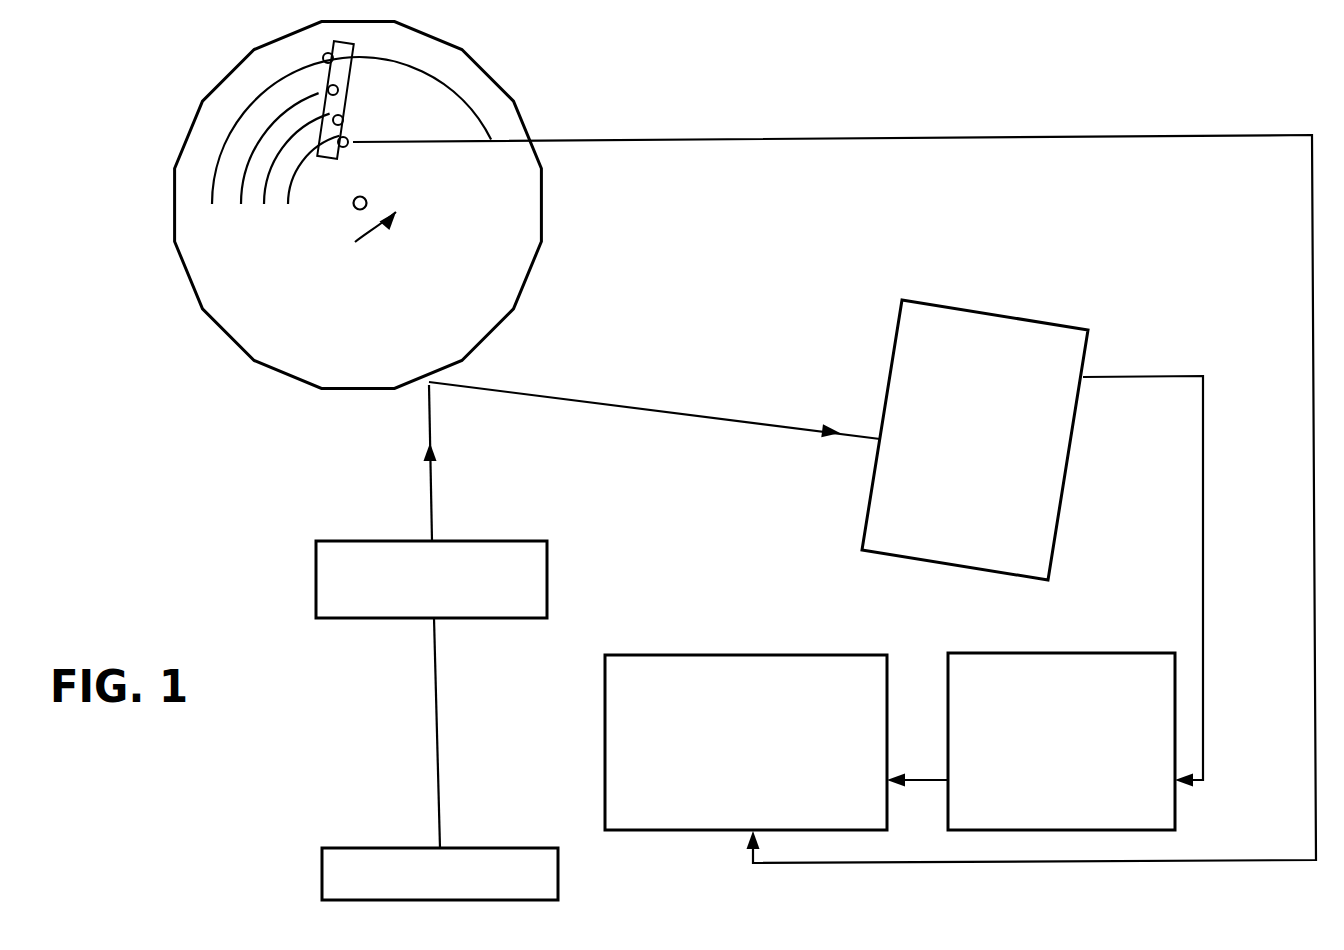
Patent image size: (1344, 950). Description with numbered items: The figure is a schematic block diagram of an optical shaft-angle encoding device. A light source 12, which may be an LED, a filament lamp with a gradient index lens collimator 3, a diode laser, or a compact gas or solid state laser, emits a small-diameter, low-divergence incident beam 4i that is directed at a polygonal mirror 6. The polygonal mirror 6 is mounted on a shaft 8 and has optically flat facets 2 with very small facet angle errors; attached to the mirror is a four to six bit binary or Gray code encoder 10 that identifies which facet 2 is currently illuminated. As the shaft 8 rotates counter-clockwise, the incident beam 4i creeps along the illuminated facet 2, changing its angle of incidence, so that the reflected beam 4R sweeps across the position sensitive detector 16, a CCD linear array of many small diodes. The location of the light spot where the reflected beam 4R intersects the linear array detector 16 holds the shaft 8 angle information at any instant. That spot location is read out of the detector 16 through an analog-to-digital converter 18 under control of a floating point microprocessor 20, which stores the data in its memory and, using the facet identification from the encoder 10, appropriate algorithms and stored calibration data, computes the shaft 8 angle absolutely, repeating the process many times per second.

The facet 2 is at (542, 206).
The collimator 3 is at (316, 580).
The incident light beam 4i is at (437, 744).
The reflected light beam 4R is at (708, 413).
The polygonal mirror 6 is at (236, 323).
The shaft 8 is at (364, 197).
The encoder 10 is at (347, 97).
The light source 12 is at (322, 853).
The position sensitive detector 16 is at (1002, 313).
The analog-to-digital converter 18 is at (1065, 655).
The microprocessor 20 is at (717, 655).